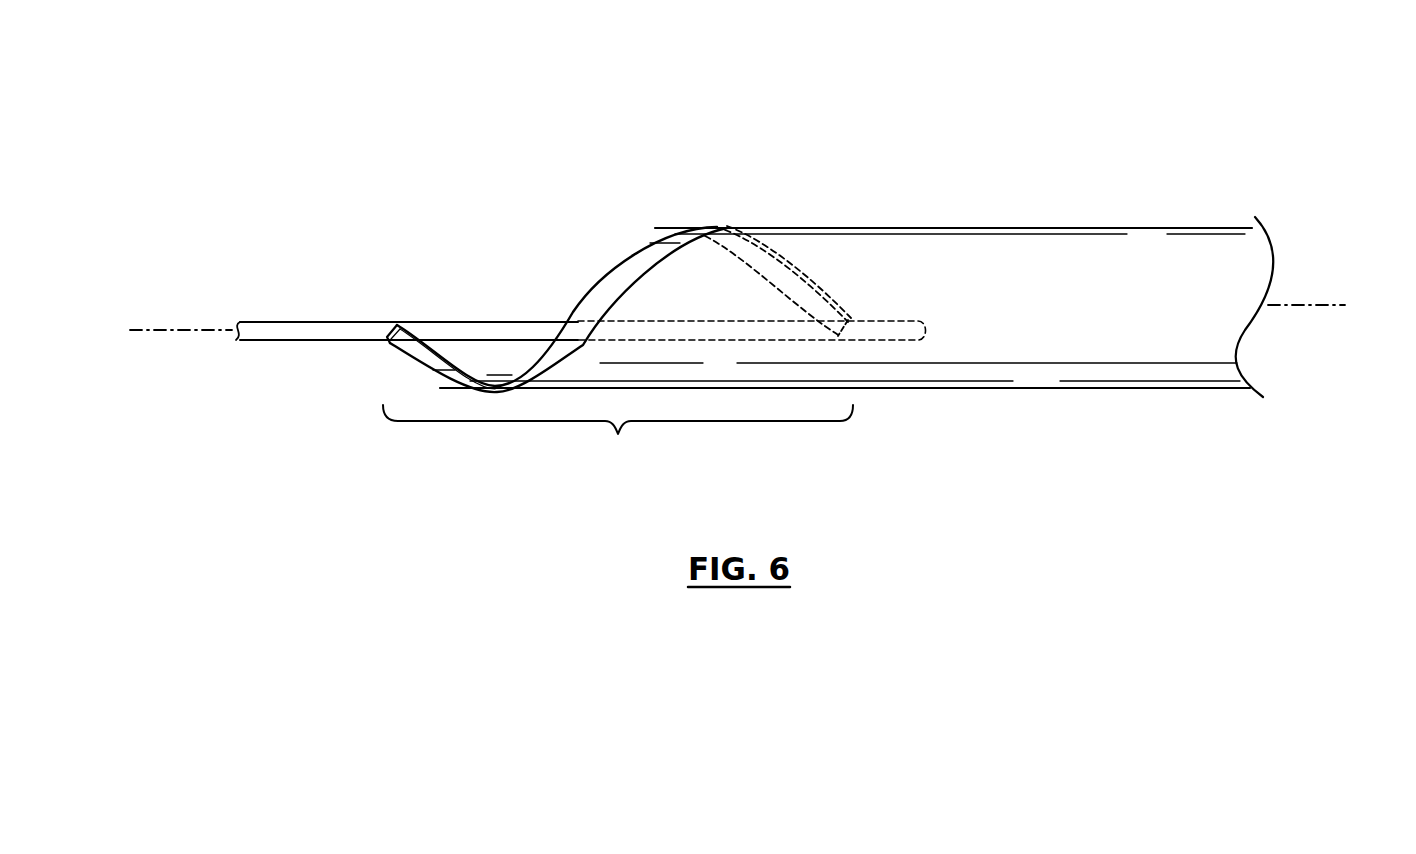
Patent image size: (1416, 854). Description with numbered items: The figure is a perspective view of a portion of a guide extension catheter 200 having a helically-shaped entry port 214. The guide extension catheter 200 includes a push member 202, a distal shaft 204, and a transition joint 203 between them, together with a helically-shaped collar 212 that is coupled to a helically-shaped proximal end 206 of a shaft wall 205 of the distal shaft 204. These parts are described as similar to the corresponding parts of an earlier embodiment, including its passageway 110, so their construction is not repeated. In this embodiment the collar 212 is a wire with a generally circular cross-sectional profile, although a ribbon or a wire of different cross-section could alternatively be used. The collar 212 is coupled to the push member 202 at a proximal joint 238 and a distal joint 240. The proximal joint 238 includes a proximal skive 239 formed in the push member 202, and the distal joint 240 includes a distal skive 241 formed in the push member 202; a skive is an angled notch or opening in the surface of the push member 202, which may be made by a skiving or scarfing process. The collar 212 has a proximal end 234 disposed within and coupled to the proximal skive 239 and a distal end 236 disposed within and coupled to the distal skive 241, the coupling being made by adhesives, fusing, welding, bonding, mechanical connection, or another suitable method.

The guide extension catheter 200 is at (476, 96).
The push member 202 is at (282, 320).
The transition joint 203 is at (618, 441).
The distal shaft 204 is at (958, 229).
The shaft wall 205 is at (760, 237).
The helically-shaped proximal end 206 is at (697, 238).
The helically-shaped collar 212 is at (643, 240).
The helically-shaped entry port 214 is at (488, 253).
The proximal end 234 is at (382, 343).
The distal end 236 is at (847, 316).
The proximal joint 238 is at (387, 349).
The proximal skive 239 is at (388, 330).
The distal joint 240 is at (823, 287).
The distal skive 241 is at (847, 318).
The passageway 110 is at (1277, 297).